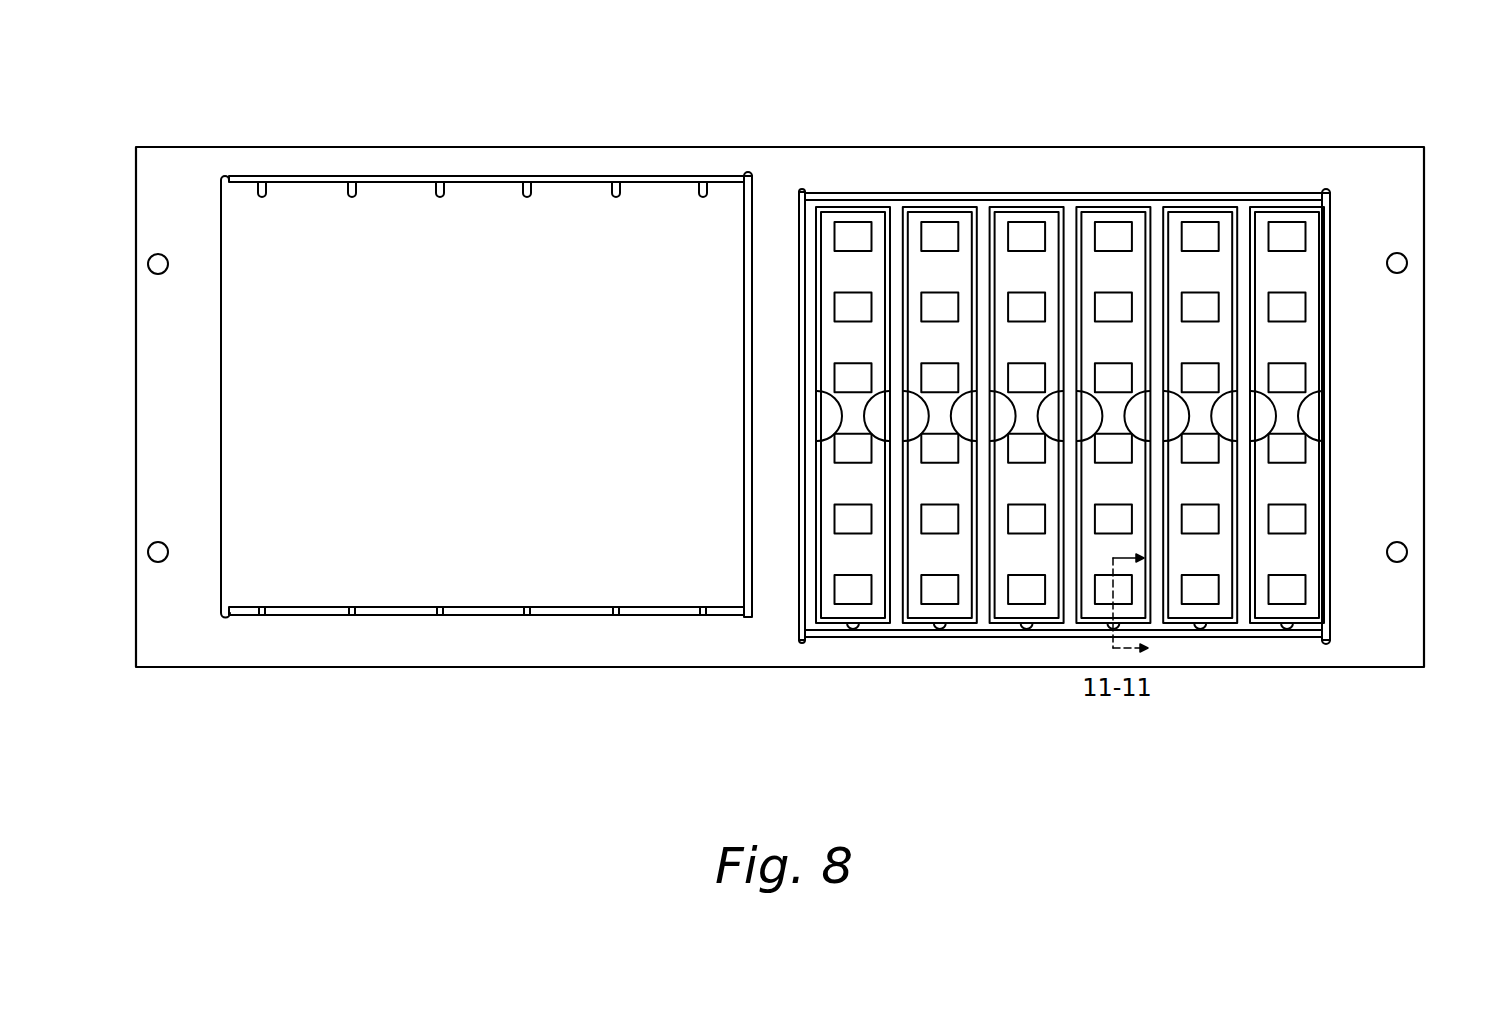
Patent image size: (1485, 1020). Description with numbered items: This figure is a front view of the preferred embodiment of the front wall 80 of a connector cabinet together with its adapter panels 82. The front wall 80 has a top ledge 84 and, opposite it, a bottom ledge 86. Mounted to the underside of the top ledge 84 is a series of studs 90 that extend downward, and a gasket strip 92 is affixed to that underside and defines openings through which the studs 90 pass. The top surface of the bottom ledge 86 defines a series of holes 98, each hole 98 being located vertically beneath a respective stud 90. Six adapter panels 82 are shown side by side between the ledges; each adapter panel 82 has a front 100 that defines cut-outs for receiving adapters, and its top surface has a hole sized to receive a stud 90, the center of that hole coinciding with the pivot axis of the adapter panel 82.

The front wall 80 is at (768, 647).
The adapter panel 82 is at (1308, 608).
The top ledge 84 is at (1064, 387).
The bottom ledge 86 is at (895, 637).
The studs 90 is at (616, 182).
The gasket strip 92 is at (1240, 205).
The holes 98 is at (440, 607).
The front 100 is at (1297, 492).